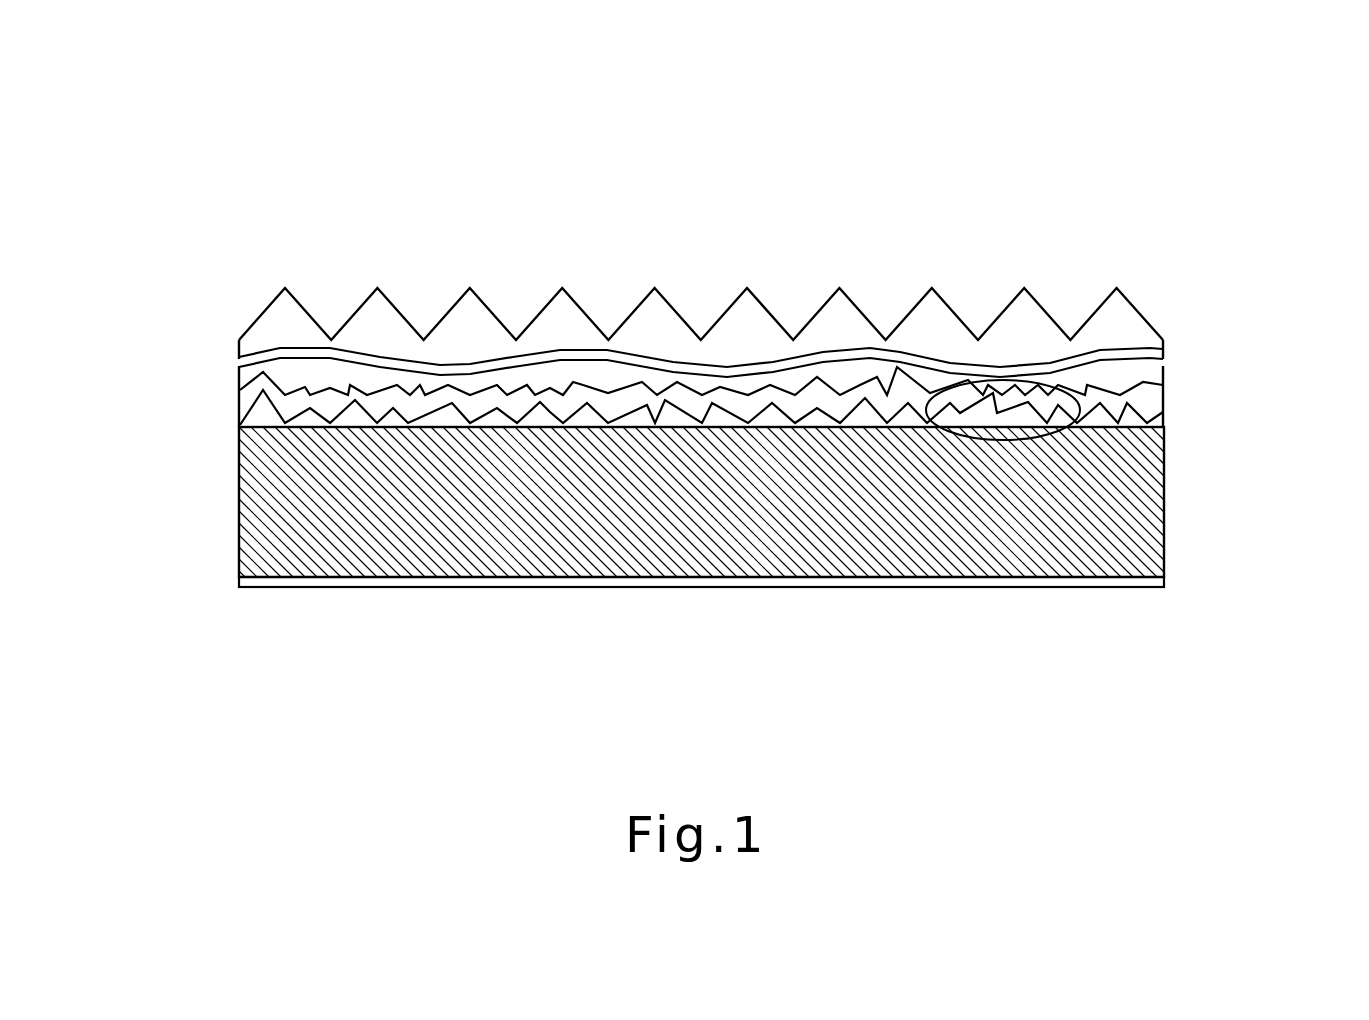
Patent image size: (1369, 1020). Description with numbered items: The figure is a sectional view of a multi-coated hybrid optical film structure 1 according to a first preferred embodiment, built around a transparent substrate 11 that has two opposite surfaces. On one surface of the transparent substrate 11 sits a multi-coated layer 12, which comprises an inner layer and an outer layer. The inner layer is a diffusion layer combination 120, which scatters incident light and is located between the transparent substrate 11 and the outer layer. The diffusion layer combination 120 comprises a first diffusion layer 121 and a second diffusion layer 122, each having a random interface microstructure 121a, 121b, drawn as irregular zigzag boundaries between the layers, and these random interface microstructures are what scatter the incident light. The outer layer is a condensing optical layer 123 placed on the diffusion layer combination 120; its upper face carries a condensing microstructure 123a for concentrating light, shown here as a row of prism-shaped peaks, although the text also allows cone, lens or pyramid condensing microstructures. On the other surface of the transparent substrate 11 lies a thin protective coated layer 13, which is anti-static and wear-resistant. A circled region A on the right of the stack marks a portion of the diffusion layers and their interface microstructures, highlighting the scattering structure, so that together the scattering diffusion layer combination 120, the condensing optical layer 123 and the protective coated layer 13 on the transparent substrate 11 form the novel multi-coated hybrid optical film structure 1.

The multi-coated hybrid optical film structure 1 is at (280, 197).
The transparent substrate 11 is at (1133, 478).
The multi-coated layer 12 is at (1285, 278).
The protective coated layer 13 is at (1140, 578).
The diffusion layer combination 120 is at (126, 370).
The first diffusion layer 121 is at (245, 425).
The interface microstructure 121a is at (1163, 403).
The interface microstructure 121b is at (1163, 377).
The second diffusion layer 122 is at (243, 390).
The condensing optical layer 123 is at (288, 313).
The condensing microstructure 123a is at (655, 290).
The enlarged detail region A is at (1017, 443).